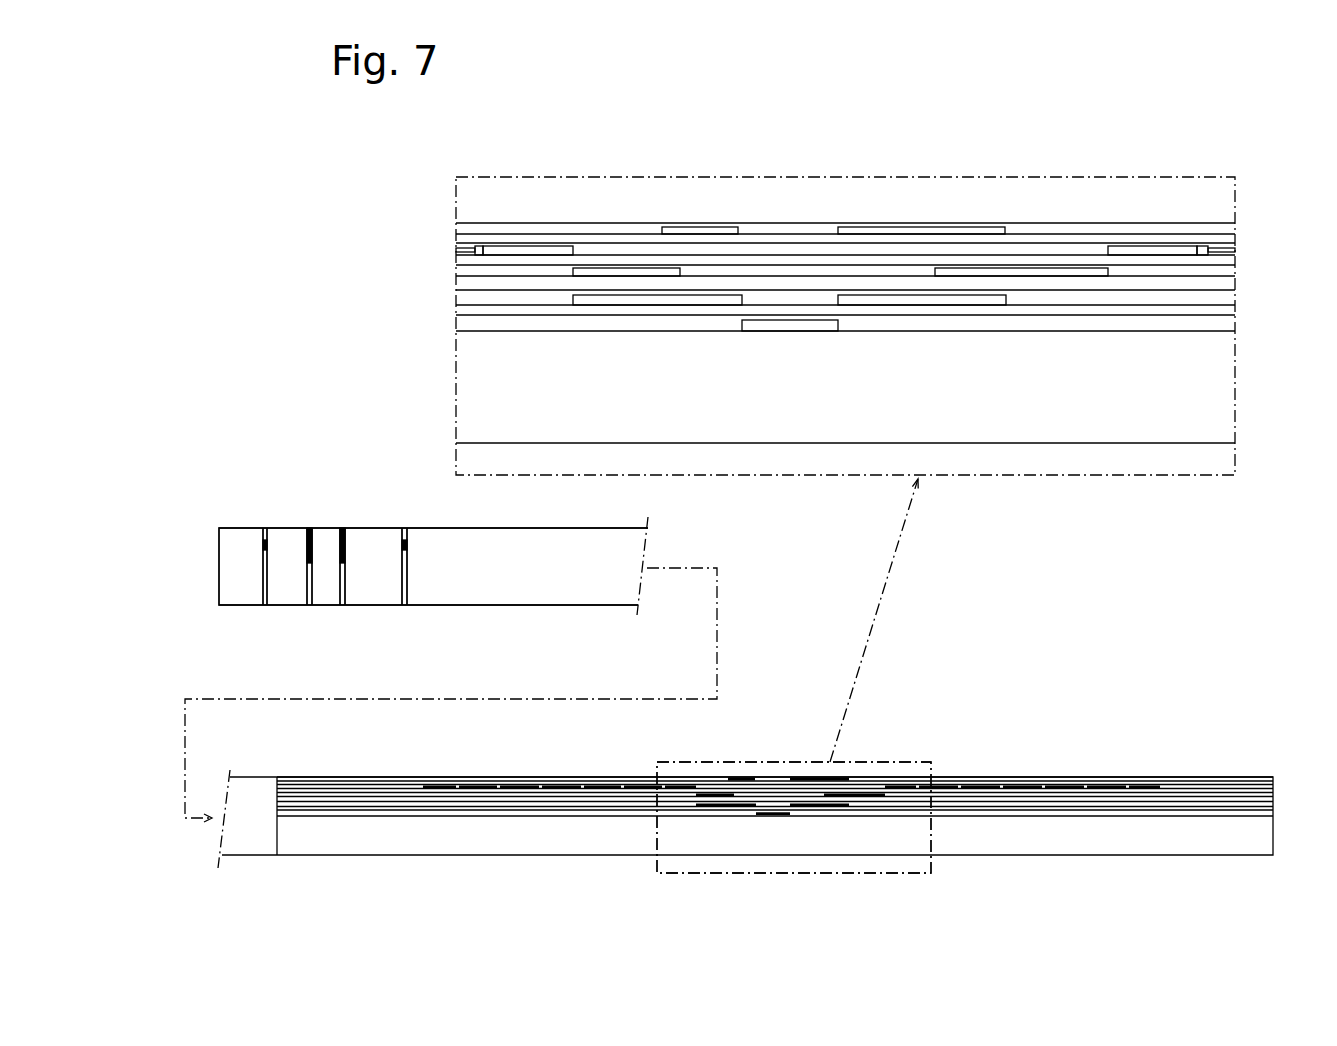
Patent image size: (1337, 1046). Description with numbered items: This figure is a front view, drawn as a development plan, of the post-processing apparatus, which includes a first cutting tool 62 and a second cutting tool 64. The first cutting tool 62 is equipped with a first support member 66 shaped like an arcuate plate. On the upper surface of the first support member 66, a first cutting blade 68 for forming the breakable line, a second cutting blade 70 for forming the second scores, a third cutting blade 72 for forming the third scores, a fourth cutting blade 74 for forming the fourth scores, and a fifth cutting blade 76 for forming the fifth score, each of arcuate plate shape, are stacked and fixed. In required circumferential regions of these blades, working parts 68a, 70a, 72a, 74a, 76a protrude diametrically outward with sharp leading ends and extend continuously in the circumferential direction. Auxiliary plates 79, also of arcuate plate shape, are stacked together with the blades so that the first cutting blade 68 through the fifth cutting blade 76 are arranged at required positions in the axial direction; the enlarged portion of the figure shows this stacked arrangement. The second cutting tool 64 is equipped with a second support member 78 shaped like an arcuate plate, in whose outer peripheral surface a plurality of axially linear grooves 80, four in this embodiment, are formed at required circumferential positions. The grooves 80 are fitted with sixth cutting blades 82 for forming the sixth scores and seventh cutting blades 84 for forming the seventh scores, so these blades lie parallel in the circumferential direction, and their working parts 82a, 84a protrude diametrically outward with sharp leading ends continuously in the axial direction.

The first cutting tool 62 is at (658, 900).
The second cutting tool 64 is at (502, 629).
The first support member 66 is at (1070, 856).
The first cutting blade 68 is at (1234, 251).
The working part of first cutting blade 68a is at (515, 248).
The second cutting blade 70 is at (1234, 229).
The working part of second cutting blade 70a is at (850, 223).
The third cutting blade 72 is at (1232, 268).
The working part of third cutting blade 72a is at (622, 268).
The fourth cutting blade 74 is at (1232, 296).
The working part of fourth cutting blade 74a is at (667, 298).
The fifth cutting blade 76 is at (1234, 322).
The working part of fifth cutting blade 76a is at (790, 326).
The second support member 78 is at (575, 607).
The auxiliary plates 79 is at (457, 308).
The grooves 80 is at (264, 590).
The sixth cutting blades 82 is at (341, 523).
The working part of sixth cutting blade 82a is at (339, 548).
The seventh cutting blades 84 is at (262, 525).
The working part of seventh cutting blade 84a is at (262, 545).